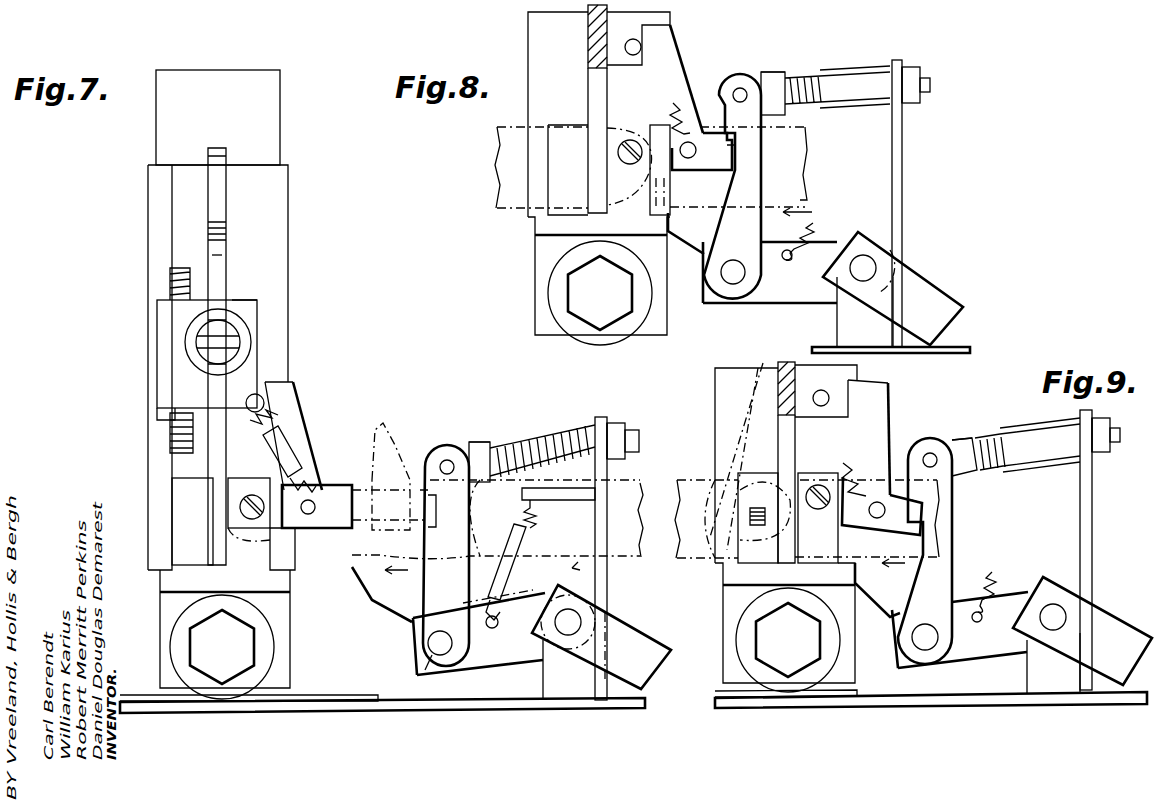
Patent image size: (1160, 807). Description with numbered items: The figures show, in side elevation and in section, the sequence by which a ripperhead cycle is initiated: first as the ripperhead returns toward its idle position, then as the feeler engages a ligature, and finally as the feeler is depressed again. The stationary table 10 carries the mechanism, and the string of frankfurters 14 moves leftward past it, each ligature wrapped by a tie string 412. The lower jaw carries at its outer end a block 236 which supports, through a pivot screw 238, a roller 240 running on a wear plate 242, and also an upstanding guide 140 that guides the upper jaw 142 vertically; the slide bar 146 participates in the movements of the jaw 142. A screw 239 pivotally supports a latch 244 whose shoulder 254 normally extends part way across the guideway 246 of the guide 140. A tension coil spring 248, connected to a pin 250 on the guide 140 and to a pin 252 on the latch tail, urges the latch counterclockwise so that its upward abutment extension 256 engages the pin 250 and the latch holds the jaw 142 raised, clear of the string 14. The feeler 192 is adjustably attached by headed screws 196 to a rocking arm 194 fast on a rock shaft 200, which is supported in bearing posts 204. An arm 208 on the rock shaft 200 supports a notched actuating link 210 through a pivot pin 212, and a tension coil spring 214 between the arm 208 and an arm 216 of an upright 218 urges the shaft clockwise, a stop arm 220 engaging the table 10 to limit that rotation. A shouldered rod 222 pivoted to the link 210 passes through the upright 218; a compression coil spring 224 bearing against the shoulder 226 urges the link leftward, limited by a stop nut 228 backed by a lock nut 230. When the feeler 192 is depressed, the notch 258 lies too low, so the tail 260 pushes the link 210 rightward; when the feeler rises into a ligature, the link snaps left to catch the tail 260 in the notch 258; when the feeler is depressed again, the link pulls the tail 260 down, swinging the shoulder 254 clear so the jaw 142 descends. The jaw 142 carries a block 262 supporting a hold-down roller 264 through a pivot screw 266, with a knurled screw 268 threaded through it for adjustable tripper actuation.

In FIG. 7, the base plate or table 10 is at (356, 713).
In FIG. 8, the base plate or table 10 is at (950, 347).
In FIG. 9, the base plate or table 10 is at (980, 705).
In FIG. 7, the string of frankfurters 14 is at (352, 558).
In FIG. 8, the string of frankfurters 14 is at (505, 165).
In FIG. 9, the string of frankfurters 14 is at (692, 480).
In FIG. 7, the upstanding guide 140 is at (150, 194).
In FIG. 8, the upstanding guide 140 is at (530, 62).
In FIG. 9, the upstanding guide 140 is at (783, 463).
In FIG. 7, the upper jaw 142 is at (222, 305).
In FIG. 8, the upper jaw 142 is at (588, 24).
In FIG. 9, the upper jaw 142 is at (778, 390).
In FIG. 7, the slide bar 146 is at (210, 226).
In FIG. 7, the feeler 192 is at (358, 606).
In FIG. 8, the feeler 192 is at (717, 258).
In FIG. 9, the feeler 192 is at (889, 628).
In FIG. 7, the rocking arm 194 is at (430, 672).
In FIG. 7, the headed screws 196 is at (502, 596).
In FIG. 7, the rock shaft 200 is at (556, 632).
In FIG. 8, the rock shaft 200 is at (876, 272).
In FIG. 9, the rock shaft 200 is at (1064, 624).
In FIG. 7, the bearing posts 204 is at (548, 681).
In FIG. 8, the bearing posts 204 is at (838, 328).
In FIG. 9, the bearing posts 204 is at (1036, 681).
In FIG. 7, the arm 208 is at (418, 662).
In FIG. 8, the arm 208 is at (752, 304).
In FIG. 9, the arm 208 is at (965, 660).
In FIG. 7, the notched actuating link 210 is at (430, 460).
In FIG. 8, the notched actuating link 210 is at (735, 80).
In FIG. 9, the notched actuating link 210 is at (922, 445).
In FIG. 7, the pivot pin 212 is at (430, 644).
In FIG. 8, the pivot pin 212 is at (728, 284).
In FIG. 9, the pivot pin 212 is at (923, 650).
In FIG. 7, the tension coil spring 214 is at (536, 514).
In FIG. 8, the tension coil spring 214 is at (812, 226).
In FIG. 9, the tension coil spring 214 is at (992, 580).
In FIG. 7, the arm of upright 216 is at (552, 488).
In FIG. 7, the upright 218 is at (595, 541).
In FIG. 8, the upright 218 is at (893, 155).
In FIG. 9, the upright 218 is at (1092, 530).
In FIG. 7, the stop arm 220 is at (630, 638).
In FIG. 8, the stop arm 220 is at (958, 292).
In FIG. 9, the stop arm 220 is at (1120, 626).
In FIG. 7, the shouldered rod 222 is at (472, 445).
In FIG. 8, the shouldered rod 222 is at (766, 76).
In FIG. 9, the shouldered rod 222 is at (954, 440).
In FIG. 7, the compression coil spring 224 is at (535, 436).
In FIG. 8, the compression coil spring 224 is at (828, 82).
In FIG. 9, the compression coil spring 224 is at (1023, 434).
In FIG. 7, the shoulder 226 is at (487, 442).
In FIG. 8, the shoulder 226 is at (780, 72).
In FIG. 9, the shoulder 226 is at (970, 440).
In FIG. 7, the stop nut 228 is at (618, 423).
In FIG. 8, the stop nut 228 is at (908, 66).
In FIG. 9, the stop nut 228 is at (1104, 450).
In FIG. 7, the lock nut 230 is at (617, 470).
In FIG. 8, the lock nut 230 is at (918, 100).
In FIG. 9, the lock nut 230 is at (1110, 420).
In FIG. 7, the block 236 is at (165, 583).
In FIG. 8, the block 236 is at (532, 228).
In FIG. 9, the block 236 is at (738, 570).
In FIG. 7, the pivot screw 238 is at (215, 668).
In FIG. 8, the pivot screw 238 is at (568, 297).
In FIG. 9, the pivot screw 238 is at (765, 655).
In FIG. 7, the screw 239 is at (240, 500).
In FIG. 8, the screw 239 is at (620, 150).
In FIG. 9, the screw 239 is at (820, 510).
In FIG. 7, the roller 240 is at (180, 645).
In FIG. 8, the roller 240 is at (552, 262).
In FIG. 9, the roller 240 is at (745, 628).
In FIG. 7, the wear plate 242 is at (318, 695).
In FIG. 9, the wear plate 242 is at (830, 697).
In FIG. 7, the latch 244 is at (368, 427).
In FIG. 8, the latch 244 is at (702, 56).
In FIG. 9, the latch 244 is at (910, 406).
In FIG. 7, the guideway 246 is at (226, 262).
In FIG. 8, the guideway 246 is at (590, 97).
In FIG. 9, the guideway 246 is at (786, 489).
In FIG. 7, the tension coil spring 248 is at (270, 448).
In FIG. 8, the tension coil spring 248 is at (676, 103).
In FIG. 9, the tension coil spring 248 is at (852, 466).
In FIG. 7, the pin 250 is at (248, 403).
In FIG. 8, the pin 250 is at (632, 56).
In FIG. 9, the pin 250 is at (822, 406).
In FIG. 7, the pin 252 is at (308, 515).
In FIG. 8, the pin 252 is at (697, 150).
In FIG. 9, the pin 252 is at (878, 518).
In FIG. 7, the shoulder 254 is at (222, 423).
In FIG. 7, the upward abutment extension 256 is at (292, 388).
In FIG. 8, the upward abutment extension 256 is at (665, 37).
In FIG. 9, the upward abutment extension 256 is at (888, 390).
In FIG. 7, the notch 258 is at (428, 512).
In FIG. 8, the notch 258 is at (736, 140).
In FIG. 9, the notch 258 is at (922, 496).
In FIG. 7, the tail 260 is at (332, 500).
In FIG. 8, the tail 260 is at (718, 172).
In FIG. 9, the tail 260 is at (912, 520).
In FIG. 7, the block 262 is at (165, 320).
In FIG. 7, the hold-down roller 264 is at (240, 318).
In FIG. 7, the pivot screw 266 is at (197, 350).
In FIG. 7, the knurled screw 268 is at (172, 425).
In FIG. 9, the string 412 is at (758, 526).